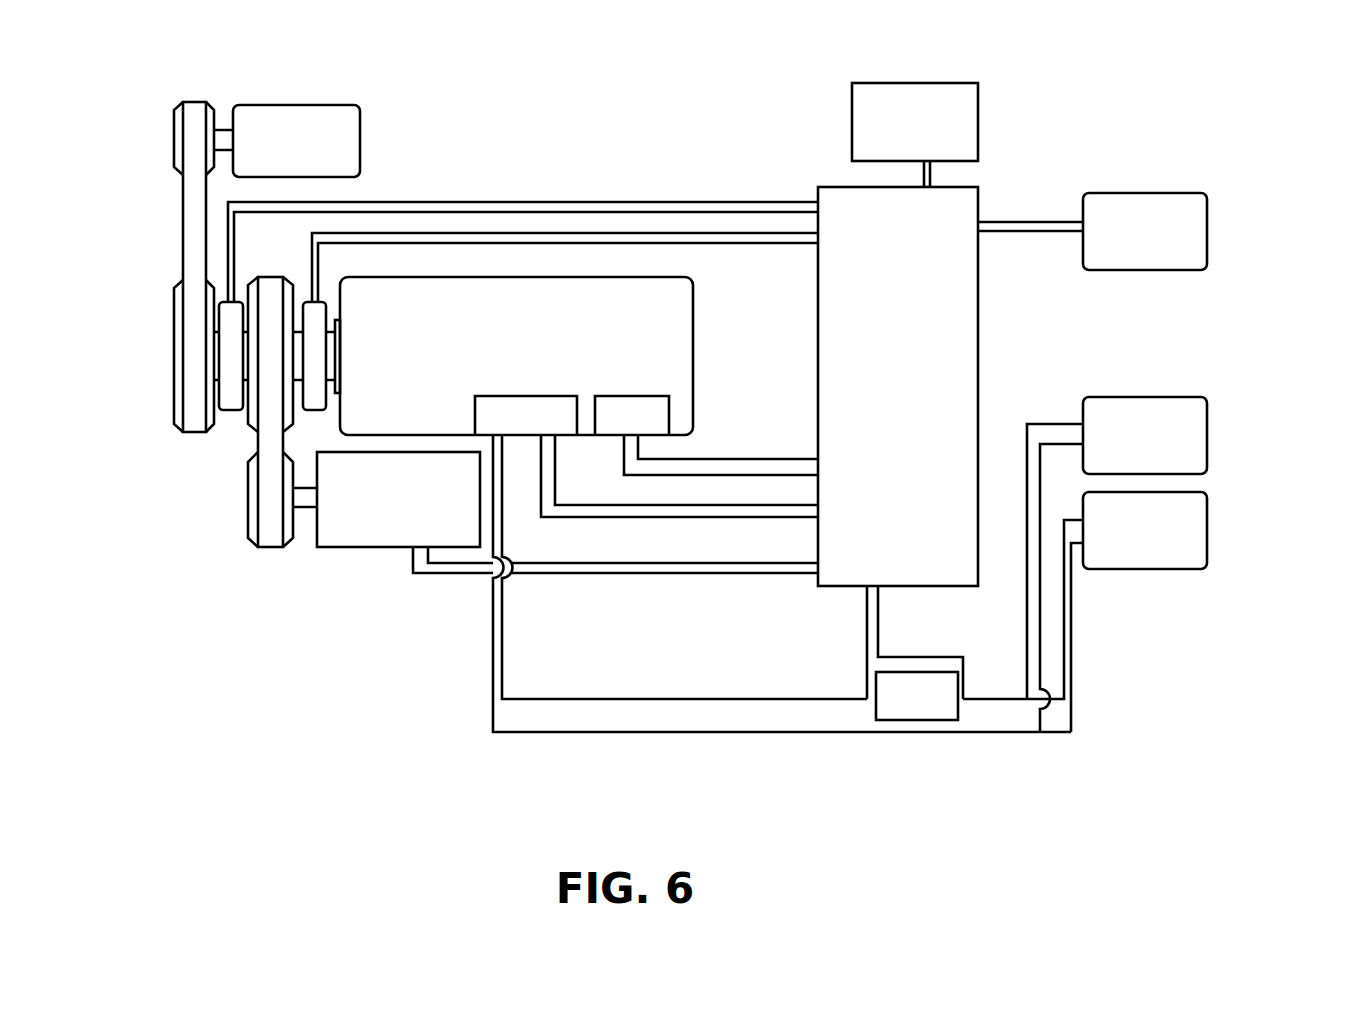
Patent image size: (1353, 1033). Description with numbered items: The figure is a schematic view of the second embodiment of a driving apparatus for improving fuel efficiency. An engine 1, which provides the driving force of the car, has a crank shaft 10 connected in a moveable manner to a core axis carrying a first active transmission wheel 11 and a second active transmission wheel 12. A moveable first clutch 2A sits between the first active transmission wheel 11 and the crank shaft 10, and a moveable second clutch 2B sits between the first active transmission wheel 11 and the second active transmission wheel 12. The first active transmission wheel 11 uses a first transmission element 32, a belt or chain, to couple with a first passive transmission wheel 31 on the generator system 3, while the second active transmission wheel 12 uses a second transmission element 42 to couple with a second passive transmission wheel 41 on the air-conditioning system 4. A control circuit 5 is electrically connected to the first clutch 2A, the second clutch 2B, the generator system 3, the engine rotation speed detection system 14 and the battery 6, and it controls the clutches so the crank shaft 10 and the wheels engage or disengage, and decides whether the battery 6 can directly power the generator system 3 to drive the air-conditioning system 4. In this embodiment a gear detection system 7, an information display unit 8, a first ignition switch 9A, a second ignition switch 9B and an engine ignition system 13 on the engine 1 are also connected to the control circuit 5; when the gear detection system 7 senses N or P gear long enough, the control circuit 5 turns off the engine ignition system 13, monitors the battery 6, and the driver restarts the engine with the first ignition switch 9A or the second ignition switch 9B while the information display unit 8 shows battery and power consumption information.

The engine 1 is at (630, 315).
The first clutch 2A is at (312, 315).
The second clutch 2B is at (232, 313).
The generator system 3 is at (370, 520).
The air-conditioning system 4 is at (337, 117).
The control circuit 5 is at (838, 215).
The battery 6 is at (915, 710).
The gear detection system 7 is at (963, 130).
The information display unit 8 is at (1187, 230).
The first ignition switch 9A is at (1190, 537).
The second ignition switch 9B is at (1193, 444).
The crank shaft 10 is at (340, 388).
The first active transmission wheel 11 is at (253, 410).
The second active transmission wheel 12 is at (180, 357).
The engine ignition system 13 is at (543, 407).
The engine rotation speed detection system 14 is at (630, 408).
The first passive transmission wheel 31 is at (245, 520).
The first transmission element 32 is at (270, 467).
The second passive transmission wheel 41 is at (182, 113).
The second transmission element 42 is at (198, 188).